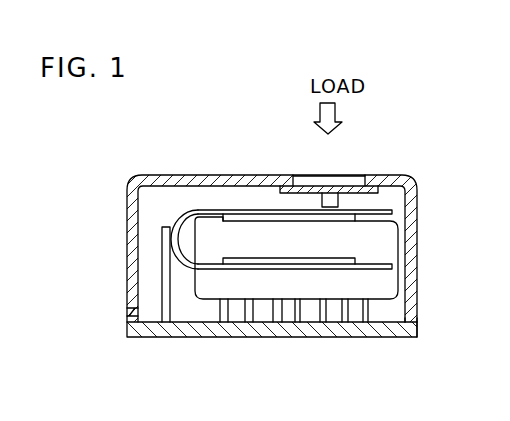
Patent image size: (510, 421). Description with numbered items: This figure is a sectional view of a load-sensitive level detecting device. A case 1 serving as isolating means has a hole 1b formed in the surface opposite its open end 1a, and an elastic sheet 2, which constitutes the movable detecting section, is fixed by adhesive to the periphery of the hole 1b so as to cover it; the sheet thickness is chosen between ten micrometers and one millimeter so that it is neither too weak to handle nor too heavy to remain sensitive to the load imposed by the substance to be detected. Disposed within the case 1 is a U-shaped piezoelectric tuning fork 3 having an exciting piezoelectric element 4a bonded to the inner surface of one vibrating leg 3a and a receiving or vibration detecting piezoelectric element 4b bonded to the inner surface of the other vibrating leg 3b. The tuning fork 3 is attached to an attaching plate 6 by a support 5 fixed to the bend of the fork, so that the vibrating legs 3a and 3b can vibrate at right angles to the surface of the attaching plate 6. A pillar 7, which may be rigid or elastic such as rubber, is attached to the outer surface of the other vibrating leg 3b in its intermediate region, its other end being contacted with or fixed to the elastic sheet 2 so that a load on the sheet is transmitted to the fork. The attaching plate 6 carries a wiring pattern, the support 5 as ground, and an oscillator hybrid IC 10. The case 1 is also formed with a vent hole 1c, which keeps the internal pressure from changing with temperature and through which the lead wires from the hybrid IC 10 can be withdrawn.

The case 1 is at (127, 203).
The open end 1a is at (410, 324).
The hole 1b is at (303, 181).
The vent hole 1c is at (128, 311).
The elastic sheet 2 is at (358, 183).
The U-shaped piezoelectric tuning fork 3 is at (177, 214).
The vibrating leg 3a is at (390, 268).
The vibrating leg 3b is at (392, 212).
The exciting piezoelectric element 4a is at (358, 256).
The receiving piezoelectric element 4b is at (243, 216).
The support 5 is at (163, 258).
The attaching plate 6 is at (205, 325).
The pillar 7 is at (334, 192).
The oscillator hybrid IC 10 is at (316, 283).